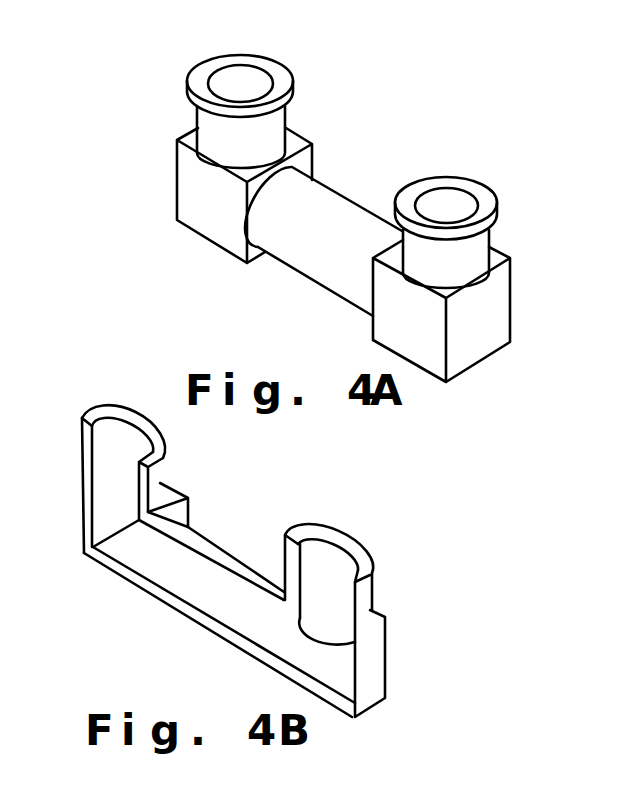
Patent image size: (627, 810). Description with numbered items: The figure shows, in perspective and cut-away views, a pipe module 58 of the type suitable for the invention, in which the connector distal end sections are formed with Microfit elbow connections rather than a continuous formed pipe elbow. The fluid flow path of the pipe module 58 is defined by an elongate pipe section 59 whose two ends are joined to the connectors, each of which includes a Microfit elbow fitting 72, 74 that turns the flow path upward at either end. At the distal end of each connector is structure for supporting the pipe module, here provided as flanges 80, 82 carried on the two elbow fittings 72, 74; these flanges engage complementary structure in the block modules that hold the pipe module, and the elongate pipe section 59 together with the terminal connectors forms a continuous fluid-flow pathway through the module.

In FIG. 4A, the pipe module 58 is at (338, 184).
In FIG. 4B, the pipe module 58 is at (233, 551).
In FIG. 4A, the elongate pipe section 59 is at (298, 272).
In FIG. 4B, the elongate pipe section 59 is at (181, 616).
In FIG. 4A, the Microfit elbow fitting 72 is at (176, 190).
In FIG. 4B, the Microfit elbow fitting 72 is at (180, 489).
In FIG. 4A, the Microfit elbow fitting 74 is at (511, 312).
In FIG. 4B, the Microfit elbow fitting 74 is at (387, 652).
In FIG. 4A, the flange 80 is at (287, 74).
In FIG. 4A, the flange 82 is at (498, 211).